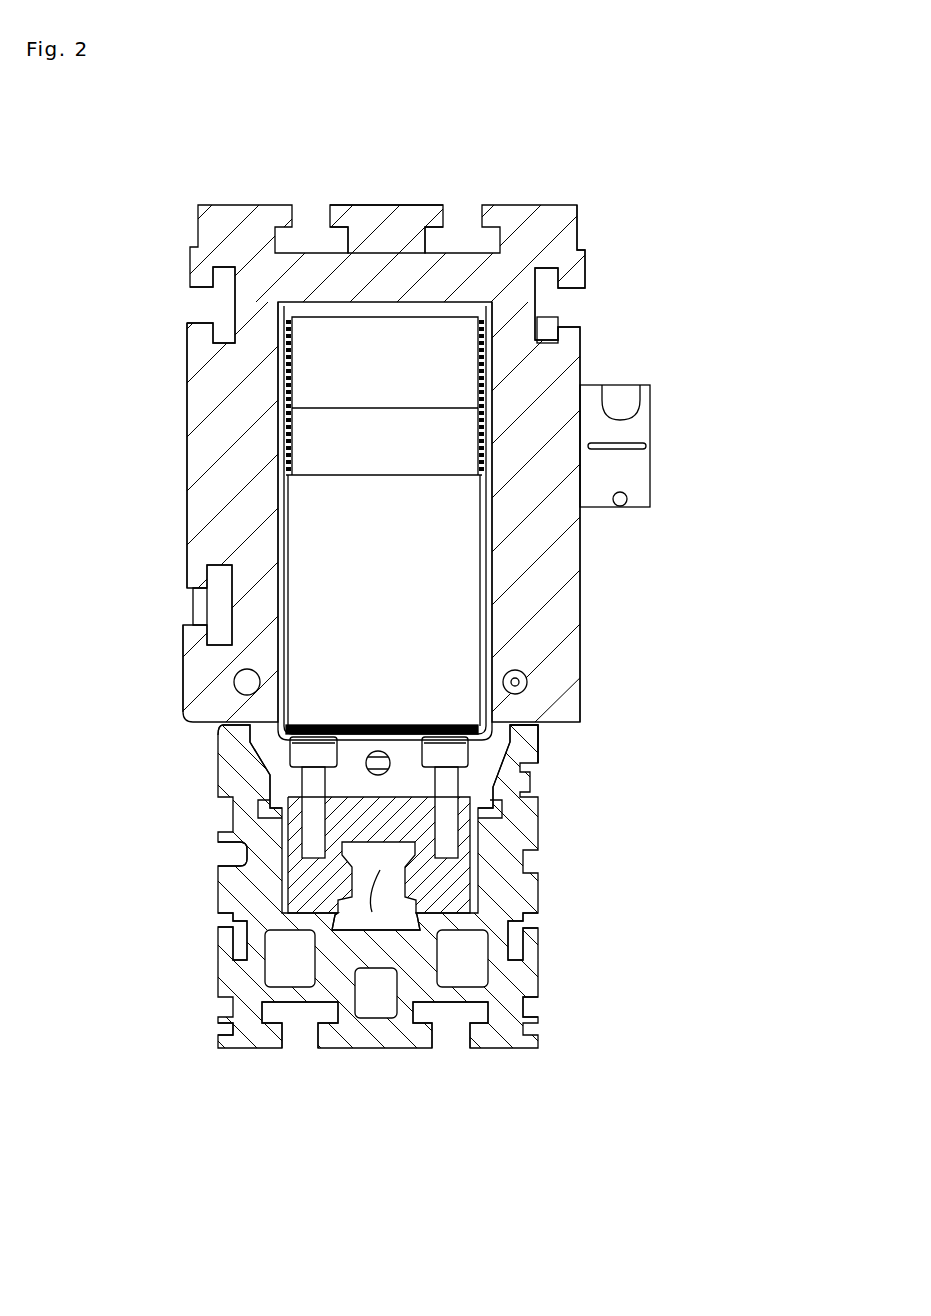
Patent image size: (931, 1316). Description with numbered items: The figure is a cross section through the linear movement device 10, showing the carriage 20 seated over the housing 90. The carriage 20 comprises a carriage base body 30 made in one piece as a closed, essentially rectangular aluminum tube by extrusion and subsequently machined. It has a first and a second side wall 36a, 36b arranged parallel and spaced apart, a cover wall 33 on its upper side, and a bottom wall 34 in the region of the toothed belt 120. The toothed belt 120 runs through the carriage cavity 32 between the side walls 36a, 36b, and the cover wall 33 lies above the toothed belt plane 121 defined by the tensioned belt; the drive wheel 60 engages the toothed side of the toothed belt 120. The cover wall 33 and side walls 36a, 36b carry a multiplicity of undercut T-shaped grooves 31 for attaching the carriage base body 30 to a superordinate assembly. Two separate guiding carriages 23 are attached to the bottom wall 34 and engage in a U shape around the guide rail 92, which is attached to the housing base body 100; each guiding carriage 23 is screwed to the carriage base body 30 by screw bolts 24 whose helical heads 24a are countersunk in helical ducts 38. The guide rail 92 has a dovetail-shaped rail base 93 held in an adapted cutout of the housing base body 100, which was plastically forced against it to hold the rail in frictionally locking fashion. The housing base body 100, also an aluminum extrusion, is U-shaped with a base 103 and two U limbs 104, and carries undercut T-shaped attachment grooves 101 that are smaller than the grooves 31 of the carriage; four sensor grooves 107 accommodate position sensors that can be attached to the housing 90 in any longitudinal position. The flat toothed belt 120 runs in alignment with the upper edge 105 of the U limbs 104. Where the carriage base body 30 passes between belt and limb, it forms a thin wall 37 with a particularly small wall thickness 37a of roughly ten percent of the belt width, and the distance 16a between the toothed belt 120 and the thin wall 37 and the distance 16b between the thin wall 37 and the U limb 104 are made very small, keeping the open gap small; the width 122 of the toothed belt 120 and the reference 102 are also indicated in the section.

The linear movement device 10 is at (712, 150).
The distance between toothed belt and thin wall 16a is at (480, 684).
The distance between thin wall and U limb 16b is at (537, 765).
The carriage 20 is at (213, 402).
The guiding carriage 23 is at (448, 886).
The screw bolt 24 is at (298, 803).
The helical head 24a is at (305, 752).
The carriage base body 30 is at (553, 240).
The undercut T-shaped groove 31 is at (220, 267).
The carriage cavity 32 is at (328, 308).
The cover wall 33 is at (388, 232).
The bottom wall 34 is at (368, 768).
The first side wall 36a is at (223, 480).
The second side wall 36b is at (535, 518).
The thin wall 37 is at (270, 795).
The wall thickness 37a is at (517, 637).
The helical duct 38 is at (502, 782).
The drive wheel 60 is at (487, 378).
The housing 90 is at (235, 985).
The guide rail 92 is at (437, 952).
The rail base 93 is at (320, 995).
The housing base body 100 is at (250, 1040).
The attachment groove 101 is at (238, 935).
The receiving gap 102 is at (380, 870).
The base 103 is at (345, 1000).
The U limb 104 is at (522, 827).
The upper edge 105 is at (520, 724).
The sensor groove 107 is at (522, 1020).
The toothed belt 120 is at (352, 723).
The toothed belt plane 121 is at (80, 730).
The width 122 is at (478, 522).